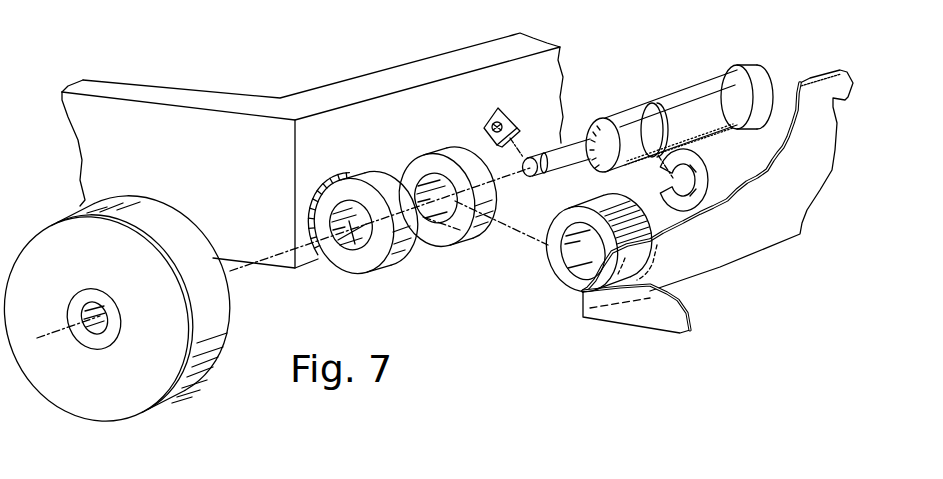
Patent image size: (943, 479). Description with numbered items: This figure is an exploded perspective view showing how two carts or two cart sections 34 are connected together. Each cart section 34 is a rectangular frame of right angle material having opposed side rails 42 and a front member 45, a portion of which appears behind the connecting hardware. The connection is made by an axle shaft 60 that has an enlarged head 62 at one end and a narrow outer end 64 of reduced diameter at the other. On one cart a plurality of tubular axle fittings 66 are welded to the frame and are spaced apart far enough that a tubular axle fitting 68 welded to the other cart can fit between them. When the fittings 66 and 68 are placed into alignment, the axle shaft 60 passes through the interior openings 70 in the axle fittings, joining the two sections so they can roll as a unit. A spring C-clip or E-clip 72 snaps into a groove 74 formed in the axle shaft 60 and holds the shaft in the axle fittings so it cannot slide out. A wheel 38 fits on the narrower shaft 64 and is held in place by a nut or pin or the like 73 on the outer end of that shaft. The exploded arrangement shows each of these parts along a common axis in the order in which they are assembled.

The cart section 34 is at (128, 168).
The wheel 38 is at (190, 245).
The side rail 42 is at (121, 123).
The front member 45 is at (398, 113).
The axle shaft 60 is at (678, 80).
The head 62 is at (755, 70).
The narrow outer end 64 is at (568, 146).
The tubular axle fittings 66 is at (397, 247).
The tubular axle fitting 68 is at (565, 278).
The interior opening 70 is at (352, 232).
The spring C-clip or E-clip 72 is at (717, 177).
The nut or pin 73 is at (510, 118).
The groove 74 is at (652, 104).